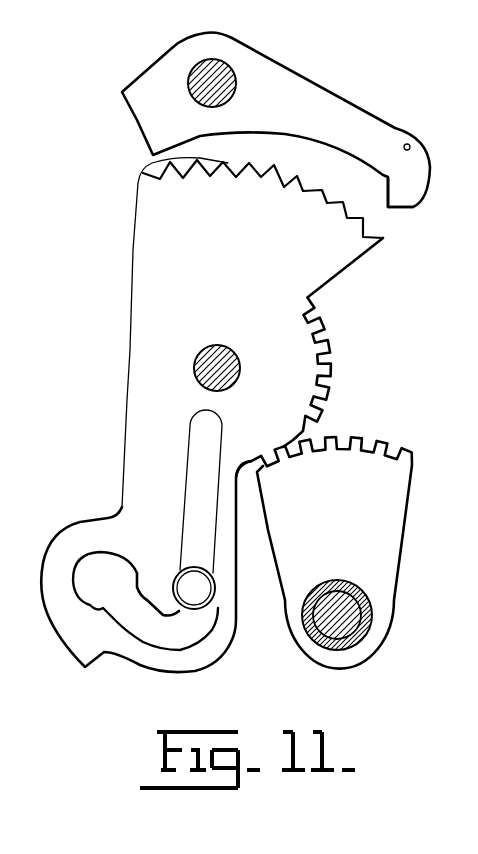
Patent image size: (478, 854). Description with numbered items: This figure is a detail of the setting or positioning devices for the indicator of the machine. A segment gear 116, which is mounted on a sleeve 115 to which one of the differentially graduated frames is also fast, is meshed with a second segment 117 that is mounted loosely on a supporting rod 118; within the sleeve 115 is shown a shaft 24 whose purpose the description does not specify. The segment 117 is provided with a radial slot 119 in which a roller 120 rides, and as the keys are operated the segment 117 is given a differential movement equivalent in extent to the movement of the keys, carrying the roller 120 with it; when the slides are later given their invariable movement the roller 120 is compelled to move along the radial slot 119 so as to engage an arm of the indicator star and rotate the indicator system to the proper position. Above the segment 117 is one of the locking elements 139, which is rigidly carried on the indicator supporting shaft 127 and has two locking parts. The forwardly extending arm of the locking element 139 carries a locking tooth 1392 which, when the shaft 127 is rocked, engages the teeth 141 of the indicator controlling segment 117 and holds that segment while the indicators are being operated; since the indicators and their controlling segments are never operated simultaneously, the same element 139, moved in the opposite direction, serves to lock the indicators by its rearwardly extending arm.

The indicator supporting shaft 127 is at (237, 76).
The locking element 139 is at (298, 102).
The locking tooth 1392 is at (393, 208).
The teeth of the indicator controlling segments 141 is at (136, 184).
The segment 117 is at (303, 367).
The supporting rod 118 is at (214, 344).
The radial slot 119 is at (183, 450).
The roller 120 is at (190, 587).
The segment gear 116 is at (390, 525).
The sleeve 115 is at (318, 597).
The shaft 24 is at (340, 623).